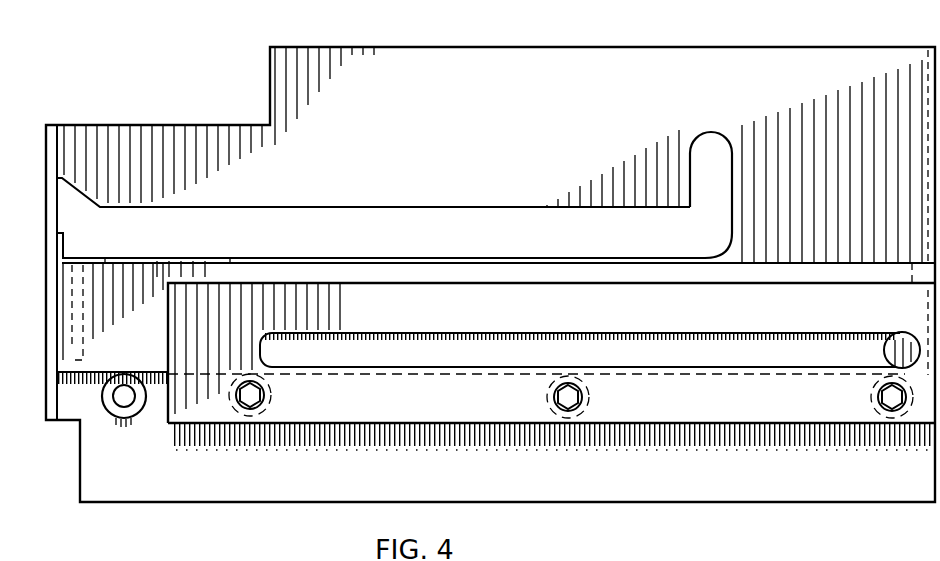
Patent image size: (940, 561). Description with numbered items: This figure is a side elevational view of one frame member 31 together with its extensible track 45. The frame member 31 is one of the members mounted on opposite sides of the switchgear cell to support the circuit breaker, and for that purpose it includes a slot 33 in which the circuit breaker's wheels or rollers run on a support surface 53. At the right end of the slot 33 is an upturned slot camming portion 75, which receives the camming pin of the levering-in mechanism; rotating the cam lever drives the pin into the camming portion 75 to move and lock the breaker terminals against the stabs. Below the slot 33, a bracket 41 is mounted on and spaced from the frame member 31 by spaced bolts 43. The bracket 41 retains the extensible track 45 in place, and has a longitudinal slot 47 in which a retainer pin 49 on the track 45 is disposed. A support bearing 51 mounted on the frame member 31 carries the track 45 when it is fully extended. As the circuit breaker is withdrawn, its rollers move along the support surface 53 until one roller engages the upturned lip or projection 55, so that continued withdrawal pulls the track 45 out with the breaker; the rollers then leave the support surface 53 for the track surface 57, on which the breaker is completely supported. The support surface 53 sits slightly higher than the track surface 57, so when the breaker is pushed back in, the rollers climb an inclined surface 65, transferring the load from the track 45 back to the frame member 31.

The frame member 31 is at (295, 78).
The slot 33 is at (320, 207).
The bracket 41 is at (382, 300).
The bolts 43 is at (264, 393).
The extensible track 45 is at (338, 270).
The longitudinal slot 47 is at (432, 362).
The retainer pin 49 is at (905, 335).
The support bearing 51 is at (108, 410).
The support surface 53 is at (278, 258).
The upturned lip or projection 55 is at (66, 246).
The track surface 57 is at (230, 257).
The inclined surface 65 is at (106, 258).
The slot camming portion 75 is at (700, 167).